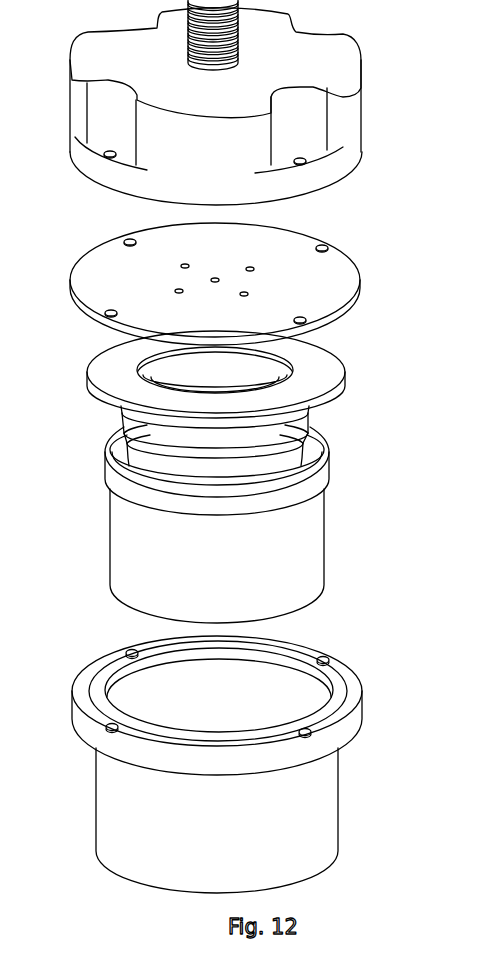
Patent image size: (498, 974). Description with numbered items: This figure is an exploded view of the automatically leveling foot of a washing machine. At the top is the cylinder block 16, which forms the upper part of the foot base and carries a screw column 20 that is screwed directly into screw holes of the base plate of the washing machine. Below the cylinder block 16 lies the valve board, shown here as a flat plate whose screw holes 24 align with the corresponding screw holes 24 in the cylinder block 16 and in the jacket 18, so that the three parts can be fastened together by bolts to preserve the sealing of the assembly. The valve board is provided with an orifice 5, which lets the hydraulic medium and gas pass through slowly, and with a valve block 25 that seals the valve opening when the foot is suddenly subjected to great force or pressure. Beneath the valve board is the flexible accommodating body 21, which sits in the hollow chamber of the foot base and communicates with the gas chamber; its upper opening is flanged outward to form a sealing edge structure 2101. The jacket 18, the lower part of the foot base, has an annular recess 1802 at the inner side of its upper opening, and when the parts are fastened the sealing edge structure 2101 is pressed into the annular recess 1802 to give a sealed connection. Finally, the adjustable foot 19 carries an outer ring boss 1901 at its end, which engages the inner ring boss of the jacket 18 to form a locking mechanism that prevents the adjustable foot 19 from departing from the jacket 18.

The orifice 5 is at (219, 282).
The cylinder block 16 is at (270, 90).
The jacket 18 is at (323, 792).
The annular recess 1802 is at (337, 694).
The adjustable foot 19 is at (293, 560).
The outer ring boss 1901 is at (320, 477).
The screw column 20 is at (233, 22).
The flexible accommodating body 21 is at (290, 445).
The sealing edge structure 2101 is at (323, 373).
The screw holes 24 is at (310, 163).
The valve block 25 is at (255, 270).